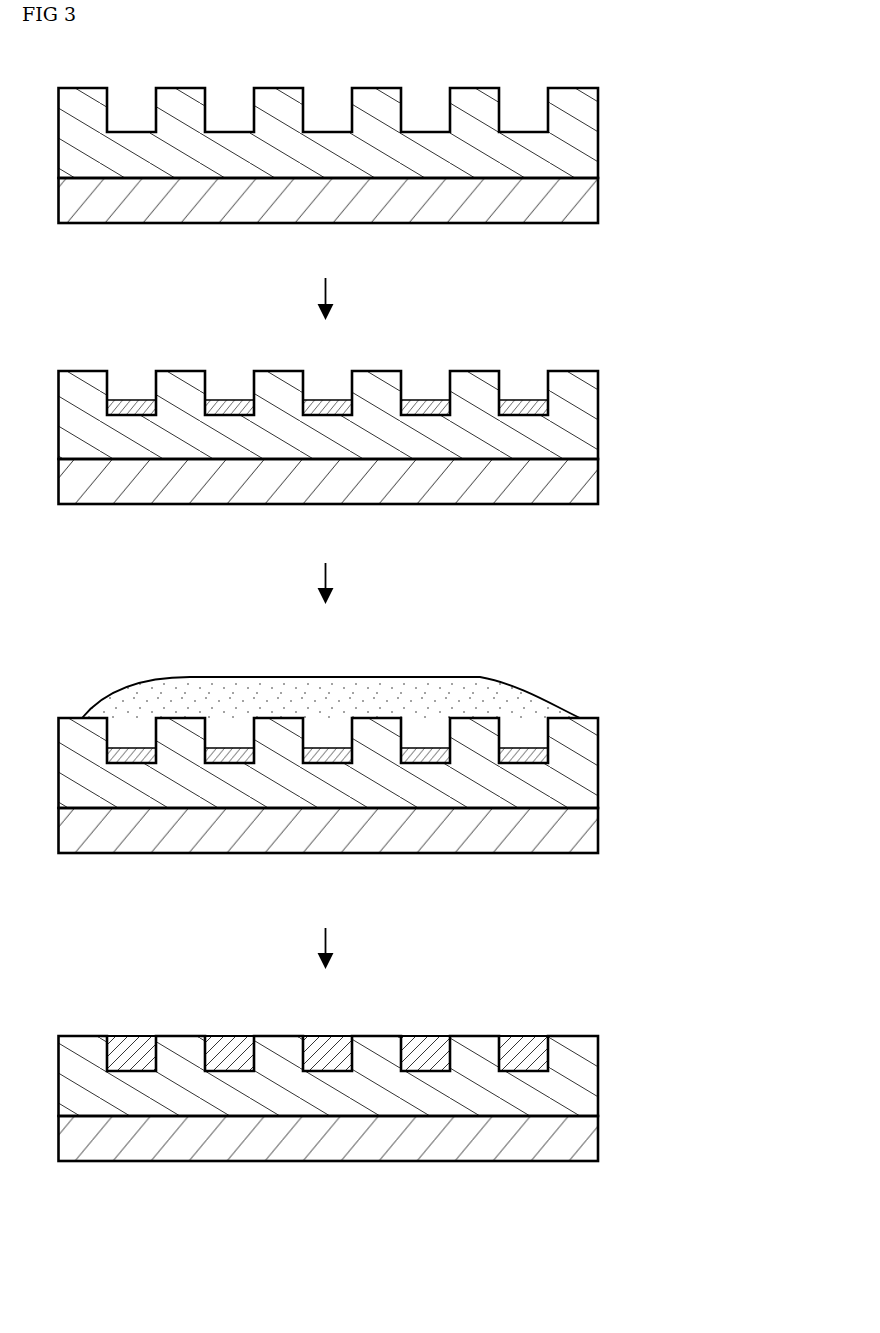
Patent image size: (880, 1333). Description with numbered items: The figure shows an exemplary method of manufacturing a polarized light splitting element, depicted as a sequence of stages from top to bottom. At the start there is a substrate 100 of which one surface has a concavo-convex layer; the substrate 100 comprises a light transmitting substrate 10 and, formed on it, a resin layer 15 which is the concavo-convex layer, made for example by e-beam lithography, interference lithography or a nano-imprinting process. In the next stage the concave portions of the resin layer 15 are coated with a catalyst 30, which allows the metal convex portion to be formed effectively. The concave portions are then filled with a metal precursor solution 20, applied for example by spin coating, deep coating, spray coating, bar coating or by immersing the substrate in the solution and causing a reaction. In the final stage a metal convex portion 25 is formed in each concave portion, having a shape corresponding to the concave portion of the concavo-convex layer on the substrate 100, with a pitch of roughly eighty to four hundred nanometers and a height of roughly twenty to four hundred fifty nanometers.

The substrate 100 is at (703, 130).
The resin layer 15 is at (598, 138).
The light transmitting substrate 10 is at (598, 203).
The catalyst 30 is at (548, 408).
The metal precursor solution 20 is at (512, 703).
The metal convex portion 25 is at (533, 1044).